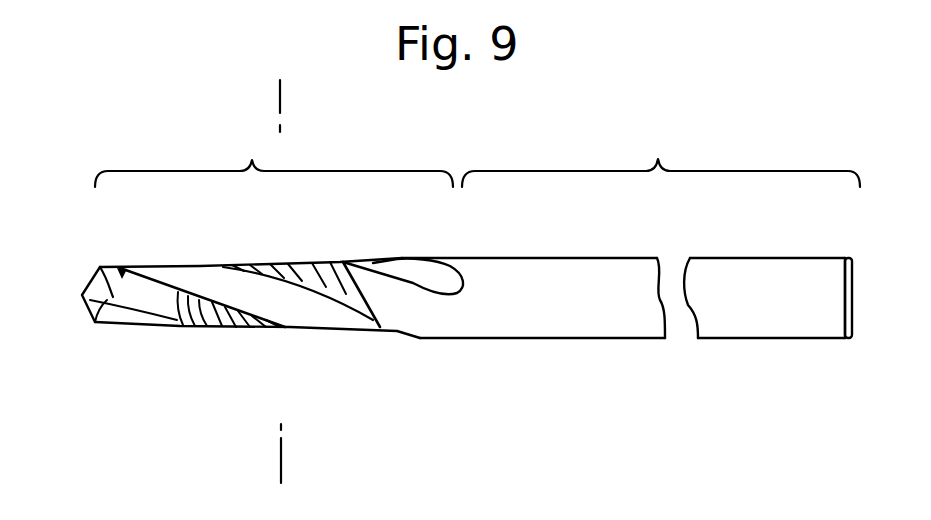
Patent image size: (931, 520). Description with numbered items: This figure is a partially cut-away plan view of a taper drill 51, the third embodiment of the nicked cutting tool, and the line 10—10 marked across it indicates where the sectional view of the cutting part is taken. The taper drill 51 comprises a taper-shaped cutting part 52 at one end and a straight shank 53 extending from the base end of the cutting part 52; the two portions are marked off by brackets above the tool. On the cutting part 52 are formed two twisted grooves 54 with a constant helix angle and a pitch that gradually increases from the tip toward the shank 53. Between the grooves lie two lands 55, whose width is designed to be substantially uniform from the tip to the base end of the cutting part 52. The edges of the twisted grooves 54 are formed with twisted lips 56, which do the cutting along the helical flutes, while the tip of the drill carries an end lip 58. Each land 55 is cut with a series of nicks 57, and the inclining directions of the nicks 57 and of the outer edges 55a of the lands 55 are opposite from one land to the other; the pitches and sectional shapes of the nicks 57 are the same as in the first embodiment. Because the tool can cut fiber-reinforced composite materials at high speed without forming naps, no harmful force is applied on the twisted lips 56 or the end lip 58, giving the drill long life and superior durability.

The section line 10- 10 is at (272, 95).
The taper drill 51 is at (600, 346).
The taper-shaped cutting part 52 is at (274, 160).
The straight shank 53 is at (661, 159).
The twisted groove 54 is at (307, 308).
The land 55 is at (118, 268).
The outer edge of land 55a is at (327, 272).
The twisted lip 56 is at (142, 268).
The nick 57 is at (268, 268).
The end lip 58 is at (88, 316).